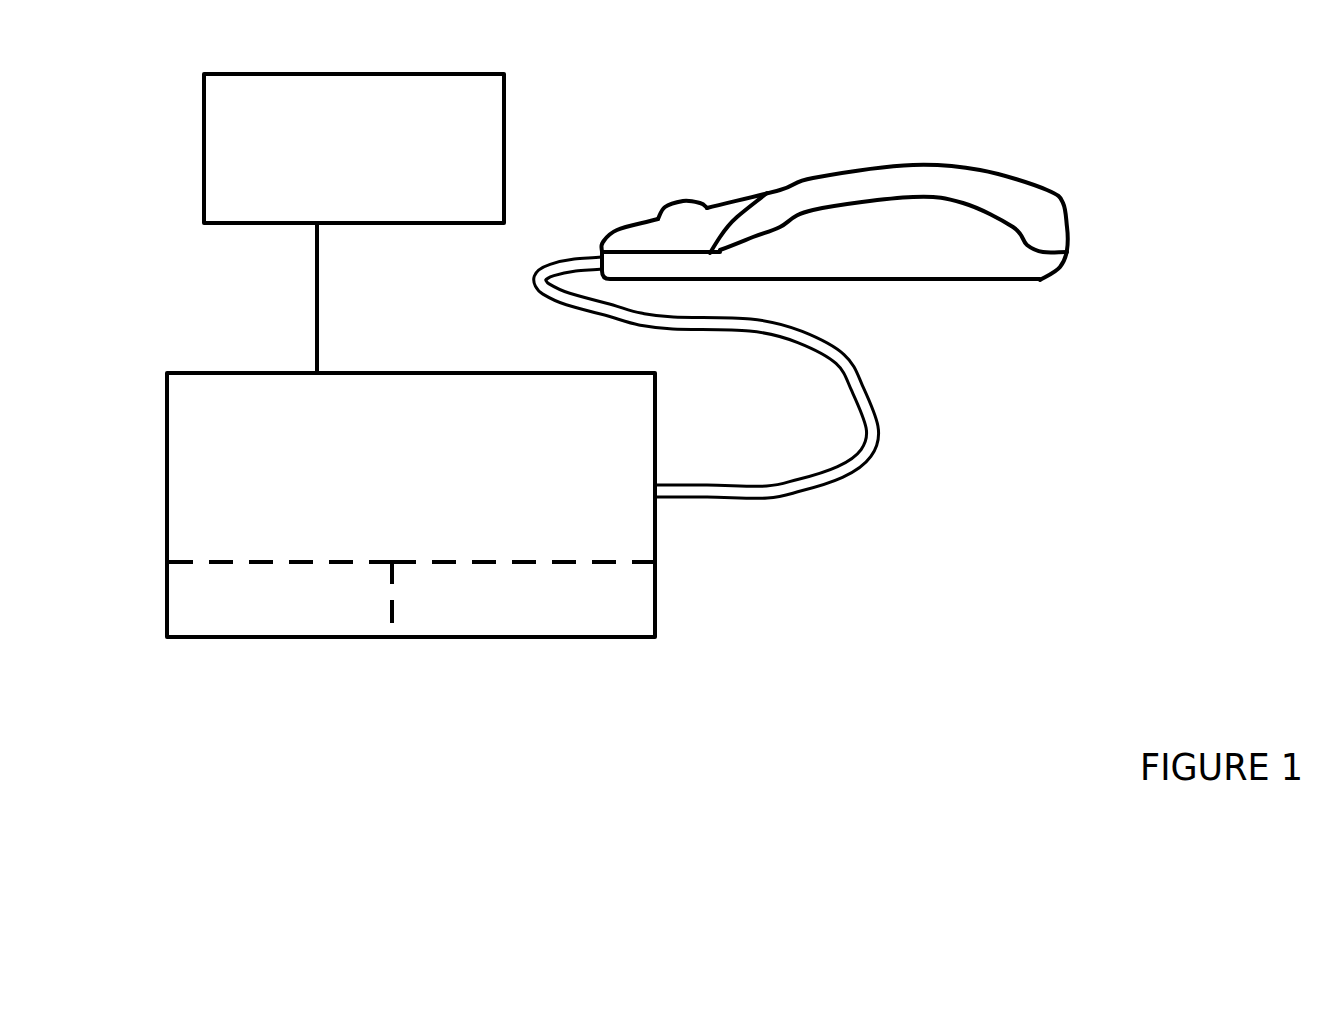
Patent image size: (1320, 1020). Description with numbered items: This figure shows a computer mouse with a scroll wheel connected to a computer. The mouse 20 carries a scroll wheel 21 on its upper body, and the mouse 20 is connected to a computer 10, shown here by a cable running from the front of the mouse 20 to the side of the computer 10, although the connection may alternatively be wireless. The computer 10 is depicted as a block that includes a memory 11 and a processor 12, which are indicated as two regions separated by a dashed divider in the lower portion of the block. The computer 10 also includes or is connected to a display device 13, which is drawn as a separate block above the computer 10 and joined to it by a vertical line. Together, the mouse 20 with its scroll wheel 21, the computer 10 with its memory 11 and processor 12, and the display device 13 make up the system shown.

The computer 10 is at (379, 527).
The memory 11 is at (184, 638).
The processor 12 is at (460, 638).
The display device 13 is at (425, 224).
The mouse 20 is at (1020, 283).
The scroll wheel 21 is at (681, 202).